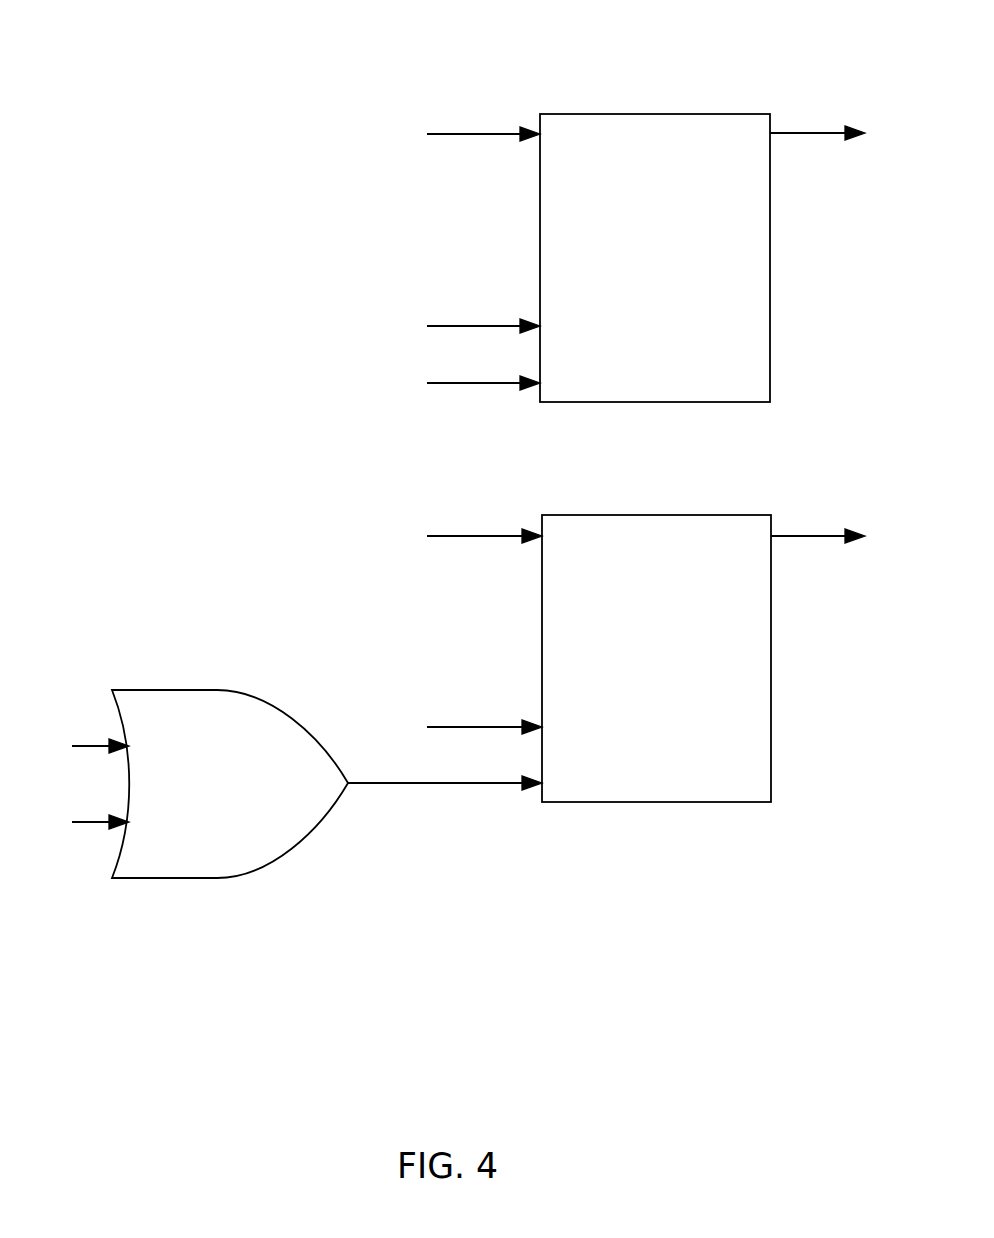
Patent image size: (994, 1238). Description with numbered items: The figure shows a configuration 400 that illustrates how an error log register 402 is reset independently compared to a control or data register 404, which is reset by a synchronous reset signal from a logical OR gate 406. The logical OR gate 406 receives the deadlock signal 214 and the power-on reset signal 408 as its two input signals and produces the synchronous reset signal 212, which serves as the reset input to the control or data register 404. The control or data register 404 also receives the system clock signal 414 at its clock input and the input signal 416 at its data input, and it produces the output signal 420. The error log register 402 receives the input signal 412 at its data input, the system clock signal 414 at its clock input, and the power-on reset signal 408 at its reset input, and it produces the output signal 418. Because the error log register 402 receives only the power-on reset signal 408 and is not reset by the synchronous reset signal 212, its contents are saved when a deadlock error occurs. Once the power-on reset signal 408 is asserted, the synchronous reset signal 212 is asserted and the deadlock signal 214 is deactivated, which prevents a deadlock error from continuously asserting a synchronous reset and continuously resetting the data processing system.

The configuration 400 is at (331, 40).
The error log register 402 is at (770, 346).
The control or data register 404 is at (771, 727).
The logical OR gate 406 is at (217, 690).
The power-on reset signal 408 is at (287, 599).
The input signal 412 is at (455, 135).
The system clock signal 414 is at (456, 517).
The input signal 416 is at (464, 527).
The output signal 418 is at (817, 121).
The output signal 420 is at (818, 523).
The synchronous reset signal 212 is at (445, 800).
The deadlock signal 214 is at (76, 739).